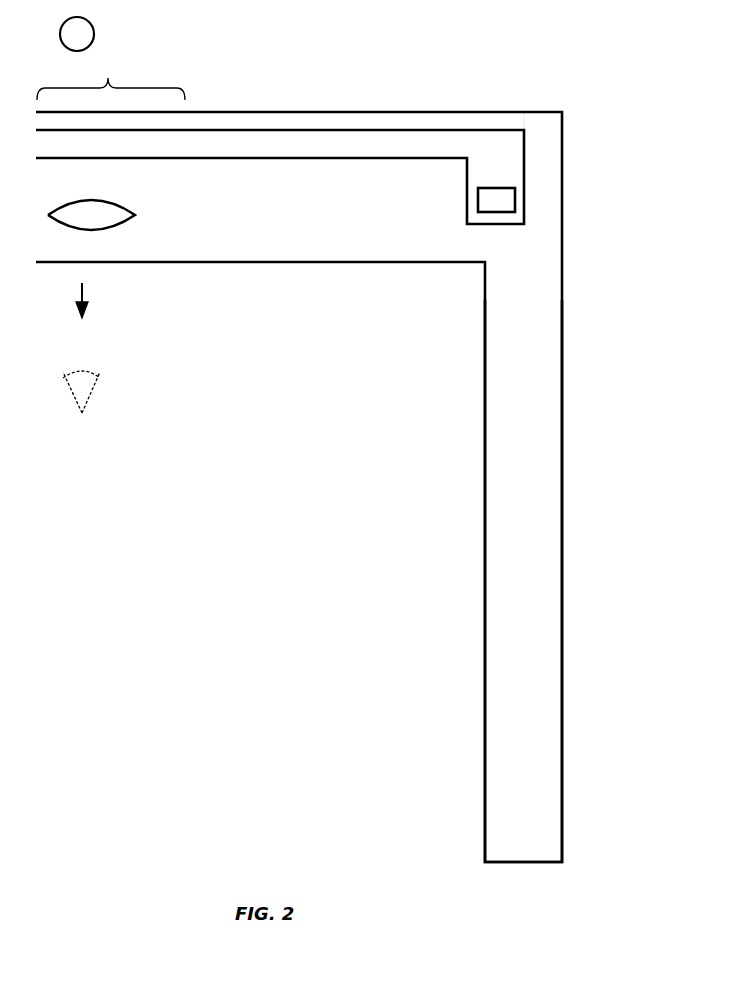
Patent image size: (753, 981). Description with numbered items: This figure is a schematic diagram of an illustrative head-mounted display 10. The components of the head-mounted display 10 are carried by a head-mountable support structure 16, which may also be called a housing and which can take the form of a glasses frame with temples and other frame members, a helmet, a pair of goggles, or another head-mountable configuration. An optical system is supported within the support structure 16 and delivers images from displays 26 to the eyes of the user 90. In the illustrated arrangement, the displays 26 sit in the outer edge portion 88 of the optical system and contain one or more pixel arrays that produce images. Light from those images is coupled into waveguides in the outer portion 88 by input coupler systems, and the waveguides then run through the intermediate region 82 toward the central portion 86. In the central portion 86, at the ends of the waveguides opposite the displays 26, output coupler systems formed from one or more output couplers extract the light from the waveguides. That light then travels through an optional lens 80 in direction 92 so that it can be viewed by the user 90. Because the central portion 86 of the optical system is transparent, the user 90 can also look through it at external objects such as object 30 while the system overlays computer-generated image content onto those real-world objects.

The head-mounted display 10 is at (637, 110).
The support structure 16 is at (550, 562).
The display 26 is at (508, 200).
The object 30 is at (87, 34).
The lens 80 is at (133, 213).
The intermediate region 82 is at (371, 136).
The central portion 86 is at (111, 77).
The outer portion 88 is at (508, 122).
The user 90 is at (90, 393).
The direction 92 is at (87, 295).